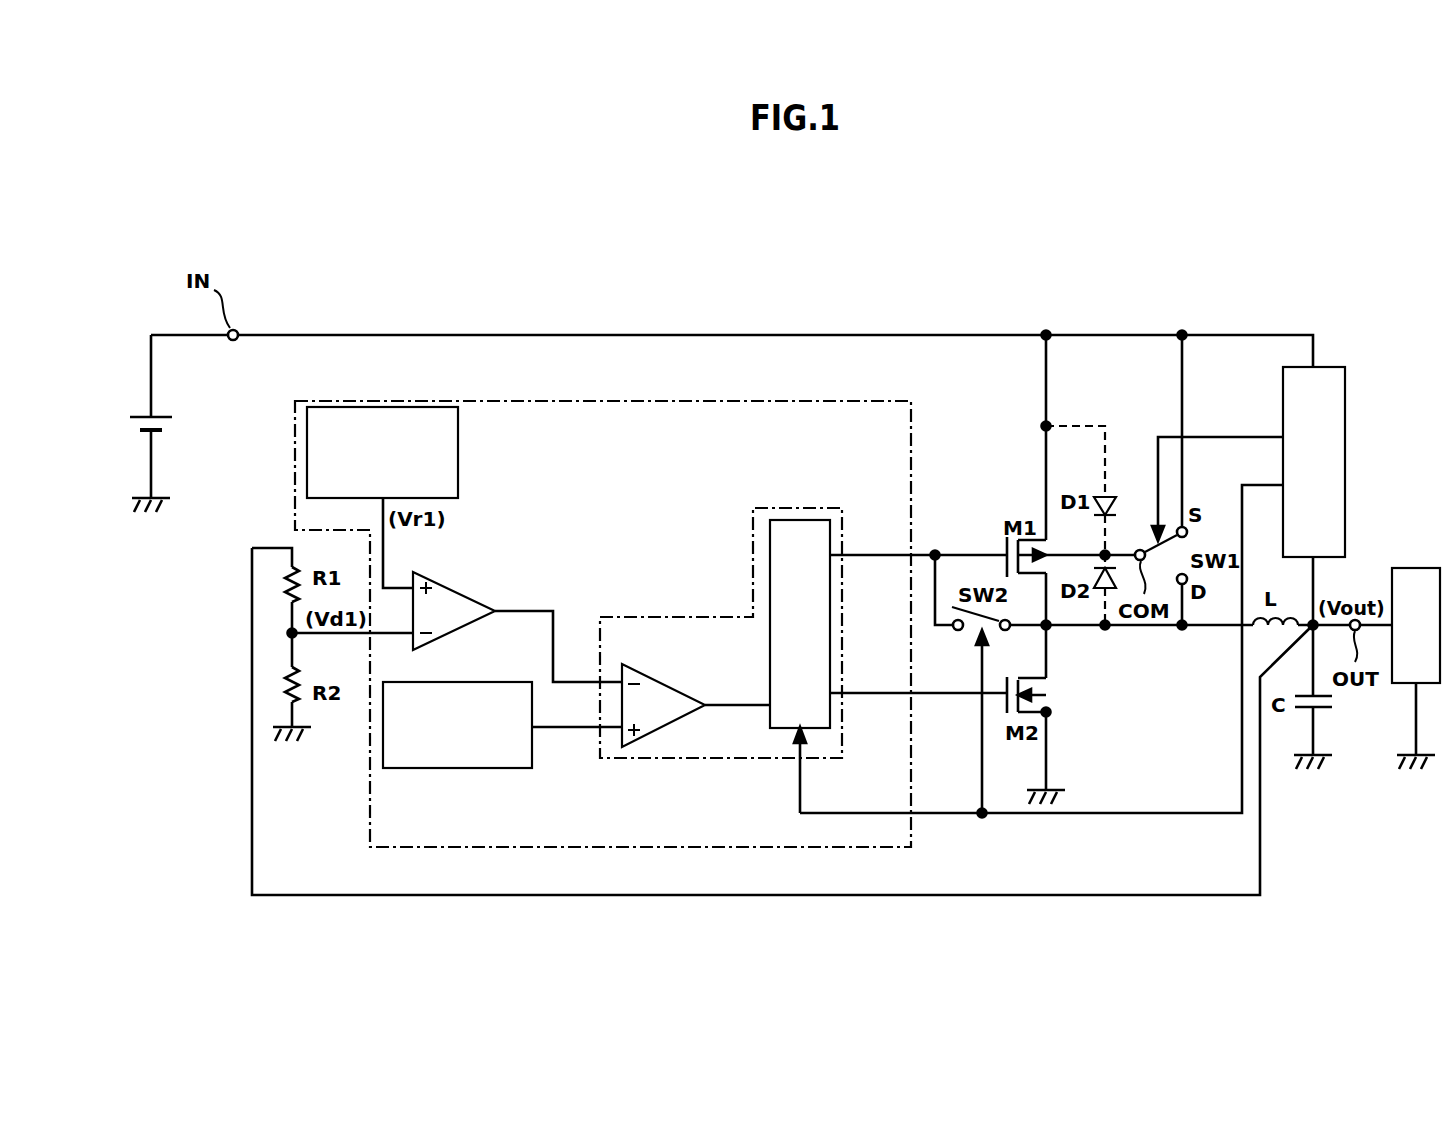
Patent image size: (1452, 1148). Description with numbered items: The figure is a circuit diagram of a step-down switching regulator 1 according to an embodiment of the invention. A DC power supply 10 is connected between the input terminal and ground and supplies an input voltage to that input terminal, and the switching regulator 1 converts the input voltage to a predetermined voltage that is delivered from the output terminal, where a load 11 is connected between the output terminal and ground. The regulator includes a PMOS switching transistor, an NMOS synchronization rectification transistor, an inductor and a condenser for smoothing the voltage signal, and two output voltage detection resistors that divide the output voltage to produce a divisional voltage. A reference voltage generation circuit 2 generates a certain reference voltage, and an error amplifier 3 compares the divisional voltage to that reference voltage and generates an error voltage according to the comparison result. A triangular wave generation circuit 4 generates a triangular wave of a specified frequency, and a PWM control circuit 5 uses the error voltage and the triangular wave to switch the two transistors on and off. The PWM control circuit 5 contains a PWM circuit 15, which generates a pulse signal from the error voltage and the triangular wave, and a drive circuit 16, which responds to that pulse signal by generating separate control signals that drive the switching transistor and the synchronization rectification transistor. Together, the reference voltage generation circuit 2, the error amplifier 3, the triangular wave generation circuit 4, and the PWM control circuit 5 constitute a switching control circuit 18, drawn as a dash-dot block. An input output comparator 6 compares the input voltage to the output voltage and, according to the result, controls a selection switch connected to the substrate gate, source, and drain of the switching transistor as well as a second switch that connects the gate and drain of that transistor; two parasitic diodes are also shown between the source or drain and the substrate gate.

The step-down switching regulator 1 is at (903, 276).
The reference voltage generation circuit 2 is at (459, 452).
The error amplifier 3 is at (468, 630).
The triangular wave generation circuit 4 is at (468, 768).
The PWM control circuit 5 is at (666, 604).
The input output comparator 6 is at (1283, 388).
The DC power supply 10 is at (131, 420).
The load 11 is at (1406, 566).
The PWM circuit 15 is at (672, 725).
The drive circuit 16 is at (778, 508).
The switching control circuit 18 is at (852, 394).